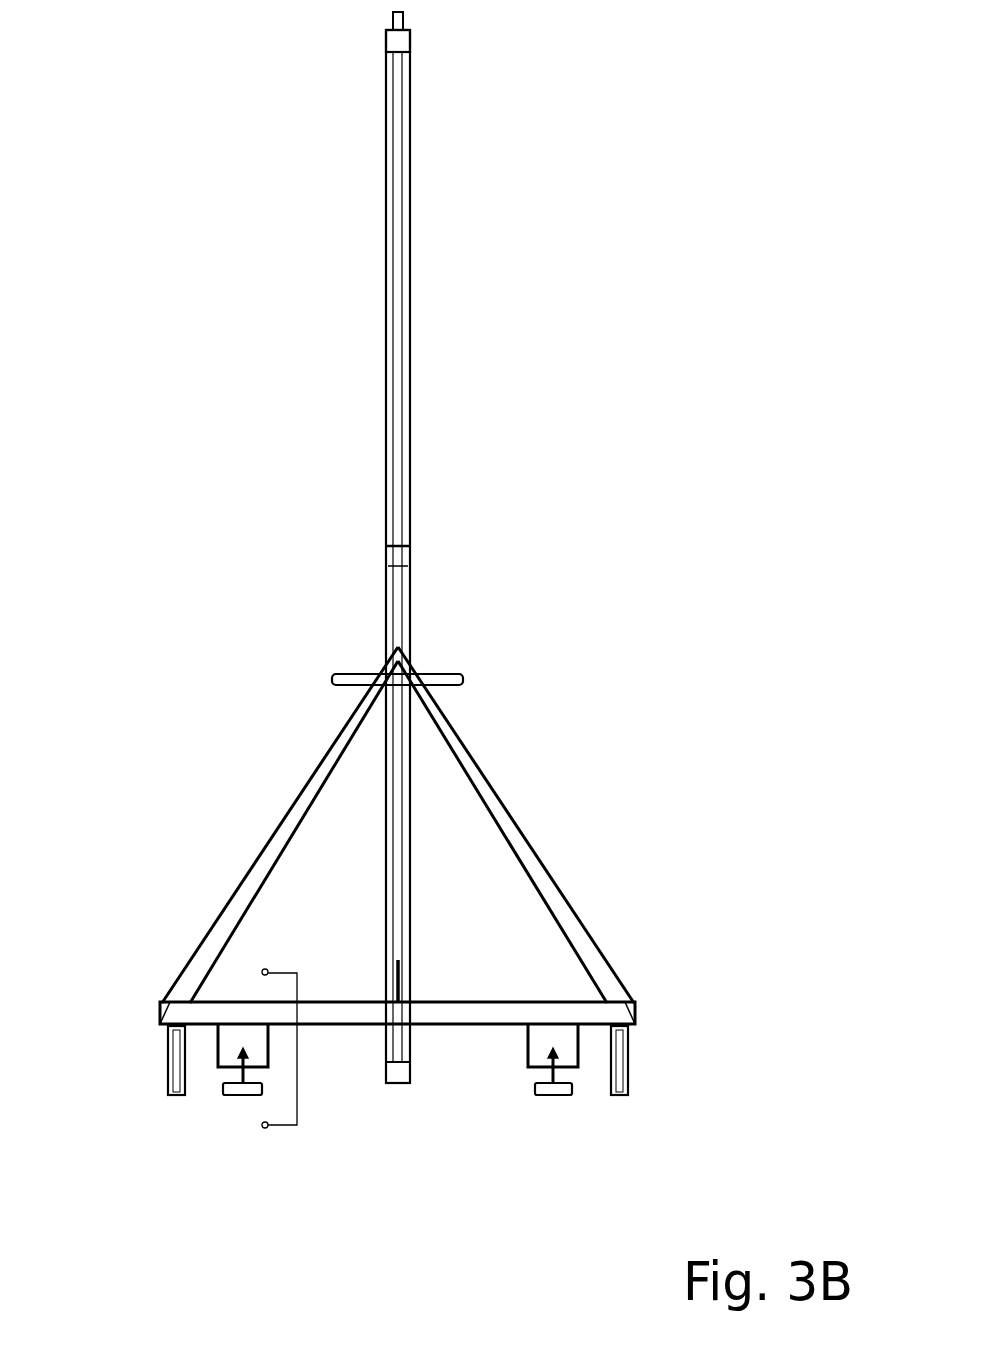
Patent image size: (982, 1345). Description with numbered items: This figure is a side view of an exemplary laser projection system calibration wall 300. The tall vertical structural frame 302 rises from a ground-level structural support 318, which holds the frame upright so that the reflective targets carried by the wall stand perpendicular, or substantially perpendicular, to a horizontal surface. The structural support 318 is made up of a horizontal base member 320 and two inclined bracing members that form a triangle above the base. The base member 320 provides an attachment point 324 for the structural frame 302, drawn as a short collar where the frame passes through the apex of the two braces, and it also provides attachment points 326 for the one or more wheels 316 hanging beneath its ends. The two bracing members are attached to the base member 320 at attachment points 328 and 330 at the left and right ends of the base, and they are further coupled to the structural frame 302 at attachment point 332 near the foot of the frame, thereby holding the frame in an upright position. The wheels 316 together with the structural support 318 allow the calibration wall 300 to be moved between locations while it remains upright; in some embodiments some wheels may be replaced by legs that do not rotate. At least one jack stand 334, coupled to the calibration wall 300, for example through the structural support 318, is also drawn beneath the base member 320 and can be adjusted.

The calibration wall 300 is at (440, 73).
The structural frame 302 is at (398, 442).
The attachment point 324 is at (395, 652).
The structural support 318 is at (525, 778).
The base member 320 is at (428, 1000).
The attachment point 332 is at (388, 1008).
The attachment point 328 is at (162, 1003).
The attachment point 330 is at (610, 1008).
The attachment points 326 is at (163, 1025).
The wheel 316 is at (618, 1095).
The jack stand 334 is at (252, 1095).